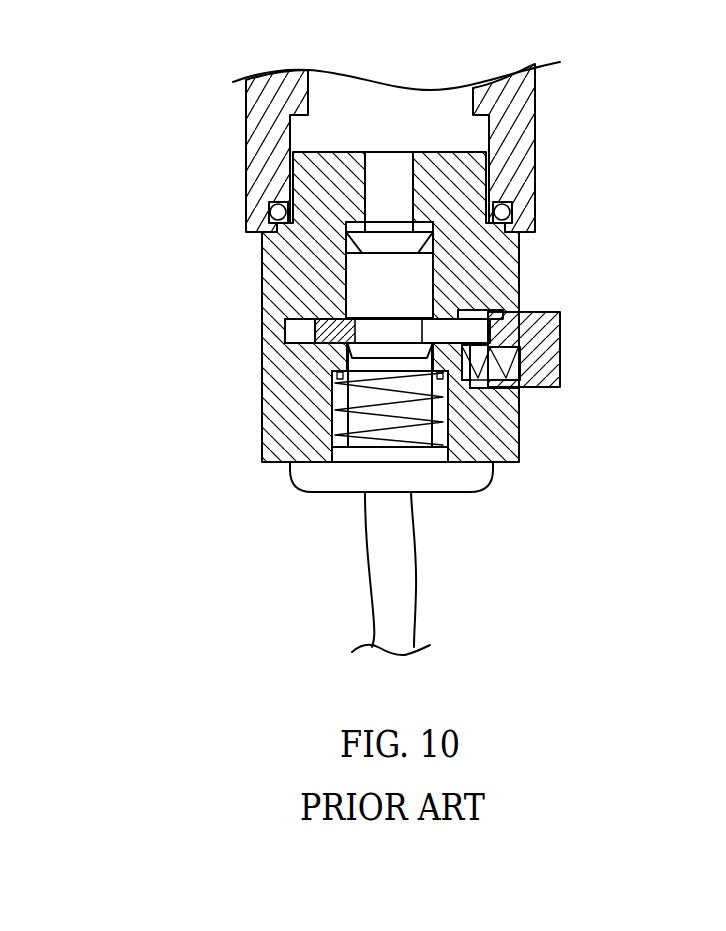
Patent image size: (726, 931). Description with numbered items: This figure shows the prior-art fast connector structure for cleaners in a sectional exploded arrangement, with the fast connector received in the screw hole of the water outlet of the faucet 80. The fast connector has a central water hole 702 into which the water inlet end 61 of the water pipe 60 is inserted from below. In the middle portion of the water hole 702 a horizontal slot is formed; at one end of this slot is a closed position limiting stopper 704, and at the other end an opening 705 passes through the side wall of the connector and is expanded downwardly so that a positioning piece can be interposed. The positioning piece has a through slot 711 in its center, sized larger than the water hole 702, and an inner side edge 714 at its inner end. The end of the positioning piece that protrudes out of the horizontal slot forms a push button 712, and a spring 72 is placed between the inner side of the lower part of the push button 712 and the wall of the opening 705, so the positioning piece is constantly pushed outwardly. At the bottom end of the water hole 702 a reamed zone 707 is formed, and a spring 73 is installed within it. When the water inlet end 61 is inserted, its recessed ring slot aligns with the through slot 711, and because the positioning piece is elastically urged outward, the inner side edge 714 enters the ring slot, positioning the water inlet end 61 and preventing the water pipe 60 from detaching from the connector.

The water pipe 60 is at (340, 600).
The water inlet end 61 is at (368, 243).
The water hole 702 is at (335, 275).
The closed position limiting stopper 704 is at (288, 322).
The opening 705 is at (482, 312).
The reamed zone 707 is at (330, 422).
The through slot 711 is at (558, 371).
The push button 712 is at (560, 320).
The inner side edge 714 is at (312, 345).
The spring 72 is at (525, 388).
The spring 73 is at (483, 468).
The faucet 80 is at (548, 117).